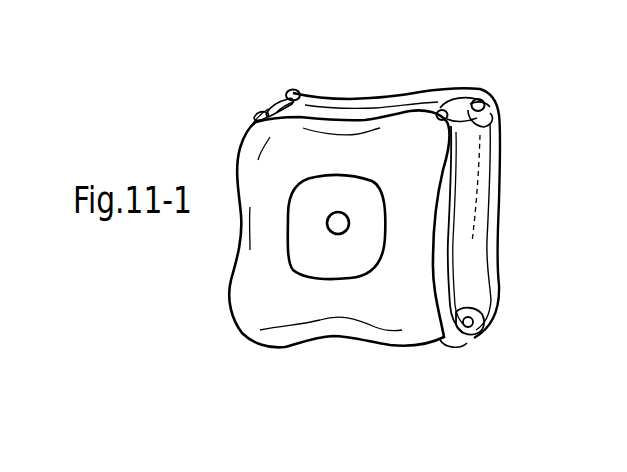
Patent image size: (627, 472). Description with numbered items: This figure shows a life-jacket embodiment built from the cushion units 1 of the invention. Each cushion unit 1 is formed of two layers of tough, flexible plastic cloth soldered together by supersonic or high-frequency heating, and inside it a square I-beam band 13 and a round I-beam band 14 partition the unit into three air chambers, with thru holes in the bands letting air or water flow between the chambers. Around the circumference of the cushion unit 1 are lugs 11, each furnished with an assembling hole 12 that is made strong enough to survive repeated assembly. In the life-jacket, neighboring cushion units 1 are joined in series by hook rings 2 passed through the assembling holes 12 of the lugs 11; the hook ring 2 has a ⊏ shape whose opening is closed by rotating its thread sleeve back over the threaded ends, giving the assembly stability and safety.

The cushion unit 1 is at (380, 100).
The hook ring 2 is at (286, 98).
The lug 11 is at (497, 123).
The assembling hole 12 is at (276, 113).
The square I-beam band 13 is at (300, 273).
The round I-beam band 14 is at (350, 226).